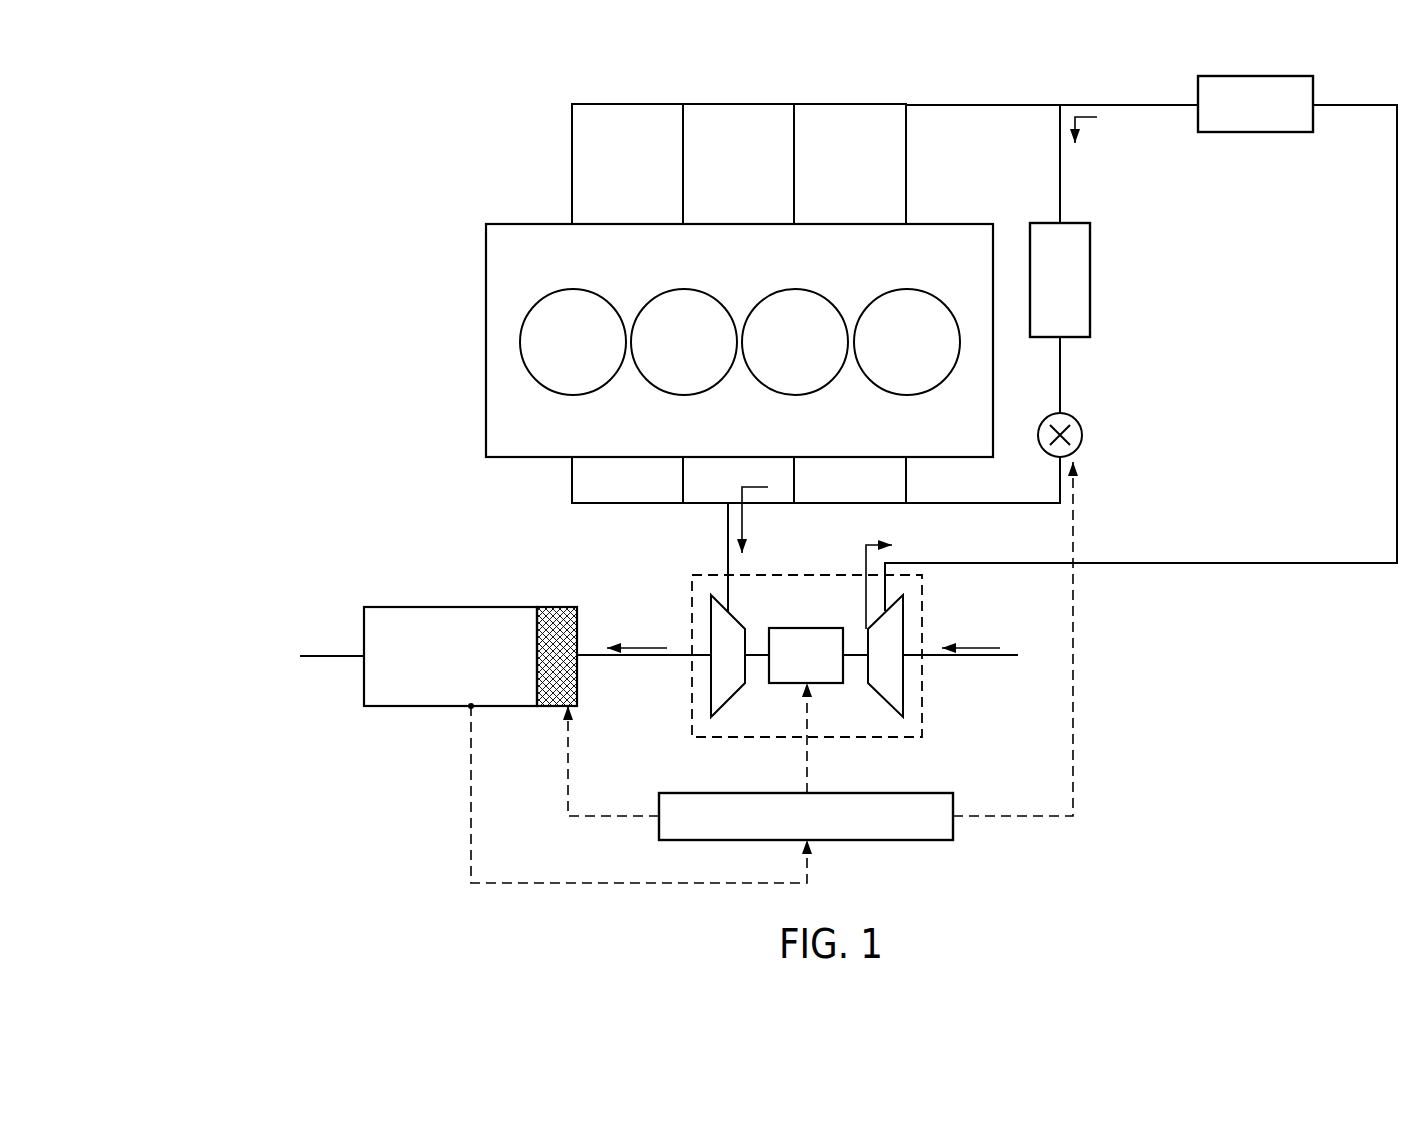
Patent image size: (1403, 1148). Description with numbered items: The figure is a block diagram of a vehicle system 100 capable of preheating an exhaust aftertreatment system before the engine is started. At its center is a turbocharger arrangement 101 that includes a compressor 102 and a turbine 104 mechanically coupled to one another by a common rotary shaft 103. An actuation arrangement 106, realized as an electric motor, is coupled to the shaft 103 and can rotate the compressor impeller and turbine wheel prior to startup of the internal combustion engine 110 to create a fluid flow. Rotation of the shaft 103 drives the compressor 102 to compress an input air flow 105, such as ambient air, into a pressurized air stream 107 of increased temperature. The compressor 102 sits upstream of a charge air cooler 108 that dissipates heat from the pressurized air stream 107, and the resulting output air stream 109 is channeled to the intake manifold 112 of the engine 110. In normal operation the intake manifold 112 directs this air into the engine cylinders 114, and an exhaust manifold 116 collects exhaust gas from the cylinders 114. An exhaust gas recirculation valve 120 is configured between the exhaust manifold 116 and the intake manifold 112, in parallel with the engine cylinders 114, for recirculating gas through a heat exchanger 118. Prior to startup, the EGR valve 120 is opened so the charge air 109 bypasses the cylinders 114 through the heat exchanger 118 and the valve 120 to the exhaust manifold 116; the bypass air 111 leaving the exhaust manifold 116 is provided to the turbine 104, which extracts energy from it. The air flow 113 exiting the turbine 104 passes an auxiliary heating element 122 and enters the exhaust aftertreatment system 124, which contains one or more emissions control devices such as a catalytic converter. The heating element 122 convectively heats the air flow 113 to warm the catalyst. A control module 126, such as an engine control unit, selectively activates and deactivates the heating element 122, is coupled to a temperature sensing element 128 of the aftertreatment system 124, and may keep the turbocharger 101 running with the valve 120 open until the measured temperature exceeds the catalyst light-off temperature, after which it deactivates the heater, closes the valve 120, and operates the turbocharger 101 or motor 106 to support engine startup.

The vehicle system 100 is at (272, 132).
The turbocharger arrangement 101 is at (922, 695).
The compressor 102 is at (868, 645).
The common rotary shaft 103 is at (762, 658).
The turbine 104 is at (747, 645).
The input air flow 105 is at (960, 646).
The actuation arrangement 106 is at (802, 628).
The pressurized air stream 107 is at (862, 548).
The charge air cooler 108 is at (1252, 133).
The output air stream 109 is at (1097, 118).
The internal combustion engine 110 is at (472, 227).
The bypass air 111 is at (749, 487).
The intake manifold 112 is at (906, 102).
The air flow exiting turbine 113 is at (638, 646).
The engine cylinders 114 is at (486, 335).
The exhaust manifold 116 is at (906, 505).
The heat exchanger 118 is at (1091, 275).
The exhaust gas recirculation (EGR) valve 120 is at (1046, 416).
The auxiliary heating element 122 is at (545, 605).
The exhaust aftertreatment system 124 is at (398, 605).
The control module 126 is at (905, 841).
The temperature sensing element 128 is at (470, 707).